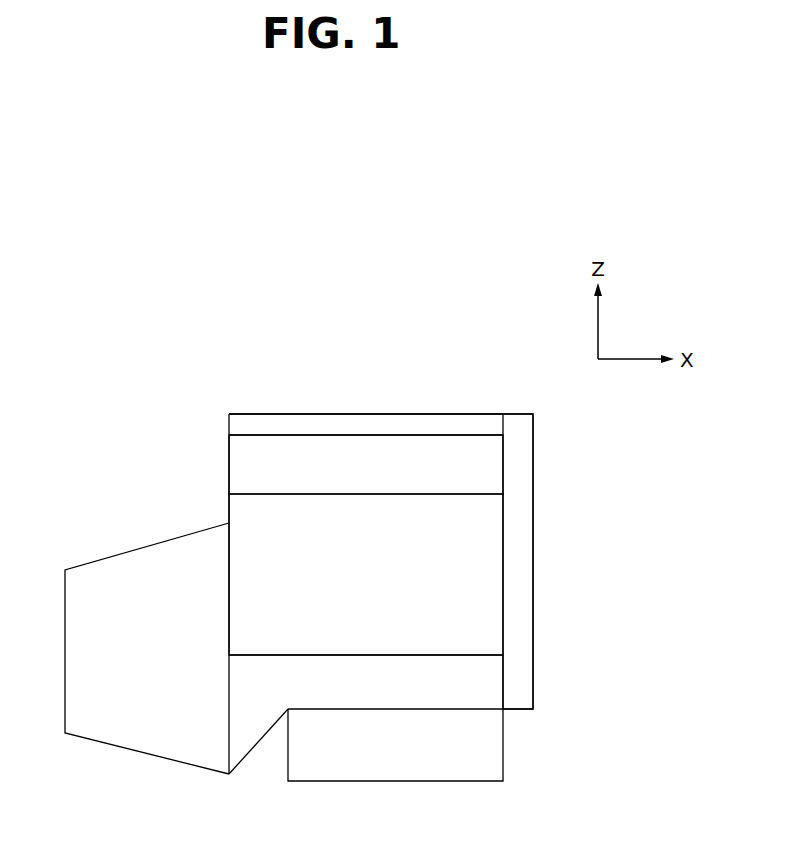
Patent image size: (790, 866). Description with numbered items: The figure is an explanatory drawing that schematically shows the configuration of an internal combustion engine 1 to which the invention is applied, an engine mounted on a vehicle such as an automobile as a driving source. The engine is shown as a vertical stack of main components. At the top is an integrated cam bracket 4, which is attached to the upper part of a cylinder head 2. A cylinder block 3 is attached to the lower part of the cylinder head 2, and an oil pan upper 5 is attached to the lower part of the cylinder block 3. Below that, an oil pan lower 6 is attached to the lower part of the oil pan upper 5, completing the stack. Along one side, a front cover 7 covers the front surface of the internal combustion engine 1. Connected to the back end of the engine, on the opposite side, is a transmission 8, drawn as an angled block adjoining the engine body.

The internal combustion engine 1 is at (388, 383).
The cylinder head 2 is at (487, 463).
The cylinder block 3 is at (472, 614).
The integrated cam bracket 4 is at (456, 422).
The oil pan upper 5 is at (472, 684).
The oil pan lower 6 is at (472, 756).
The front cover 7 is at (517, 541).
The transmission 8 is at (107, 725).